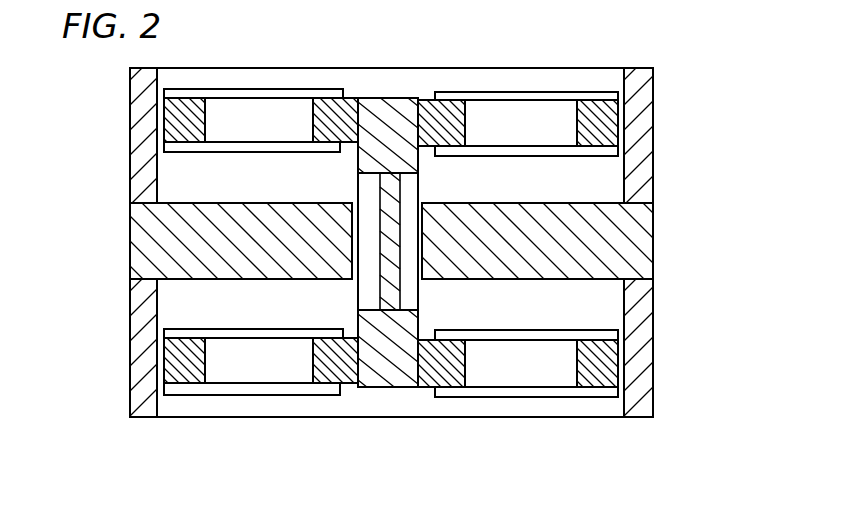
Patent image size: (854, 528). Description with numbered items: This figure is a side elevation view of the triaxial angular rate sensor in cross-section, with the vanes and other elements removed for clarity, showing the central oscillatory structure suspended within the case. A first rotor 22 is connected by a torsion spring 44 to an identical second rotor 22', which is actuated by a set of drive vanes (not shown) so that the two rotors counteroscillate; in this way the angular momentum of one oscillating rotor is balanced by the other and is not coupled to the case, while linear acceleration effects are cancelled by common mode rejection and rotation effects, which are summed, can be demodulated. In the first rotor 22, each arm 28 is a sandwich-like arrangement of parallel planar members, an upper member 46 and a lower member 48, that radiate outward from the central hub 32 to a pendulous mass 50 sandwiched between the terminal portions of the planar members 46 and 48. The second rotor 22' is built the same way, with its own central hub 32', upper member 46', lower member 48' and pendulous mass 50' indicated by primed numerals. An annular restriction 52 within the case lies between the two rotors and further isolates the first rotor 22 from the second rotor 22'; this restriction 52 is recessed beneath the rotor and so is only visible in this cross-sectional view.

The first rotor 22 is at (253, 84).
The central hub 32 is at (389, 77).
The upper member 46 is at (521, 81).
The arm 28 is at (569, 89).
The pendulous mass 50 is at (665, 121).
The lower member 48 is at (595, 165).
The torsion spring 44 is at (410, 197).
The annular restriction 52 is at (573, 202).
The lower member of second rotor 48' is at (587, 313).
The pendulous mass of second rotor 50' is at (667, 363).
The second rotor 22' is at (253, 395).
The central hub of second rotor 32' is at (389, 399).
The upper member of second rotor 46' is at (526, 402).